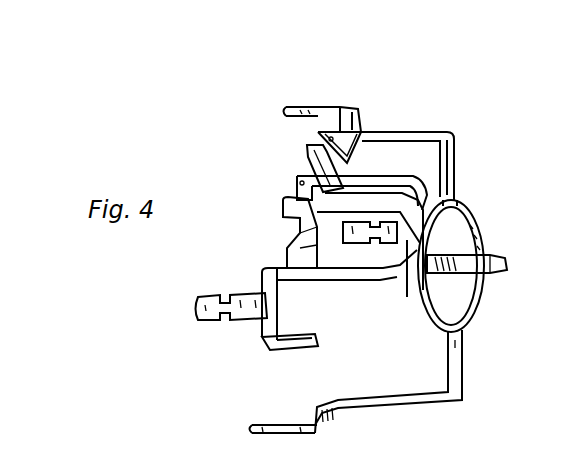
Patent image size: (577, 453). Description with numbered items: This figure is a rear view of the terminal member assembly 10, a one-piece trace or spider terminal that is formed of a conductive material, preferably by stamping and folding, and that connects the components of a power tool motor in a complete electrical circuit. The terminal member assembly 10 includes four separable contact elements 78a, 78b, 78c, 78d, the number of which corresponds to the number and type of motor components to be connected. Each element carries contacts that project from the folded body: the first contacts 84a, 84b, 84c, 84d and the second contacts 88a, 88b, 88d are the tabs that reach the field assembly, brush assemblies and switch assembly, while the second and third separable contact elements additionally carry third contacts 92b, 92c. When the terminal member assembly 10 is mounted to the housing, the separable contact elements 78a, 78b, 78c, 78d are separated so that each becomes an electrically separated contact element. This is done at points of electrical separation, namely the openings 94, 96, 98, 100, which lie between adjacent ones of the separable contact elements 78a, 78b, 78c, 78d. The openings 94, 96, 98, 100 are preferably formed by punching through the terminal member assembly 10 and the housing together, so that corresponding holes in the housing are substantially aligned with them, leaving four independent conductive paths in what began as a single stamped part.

The terminal member assembly 10 is at (455, 116).
The separable contact element 78a is at (380, 395).
The separable contact element 78b is at (357, 277).
The separable contact element 78c is at (505, 262).
The separable contact element 78d is at (443, 135).
The first contact 84a is at (265, 425).
The first contact 84b is at (198, 318).
The first contact 84c is at (298, 237).
The first contact 84d is at (305, 107).
The second contact 88a is at (298, 178).
The second contact 88b is at (297, 350).
The second contact 88d is at (323, 132).
The third contact 92b is at (283, 210).
The third contact 92c is at (307, 148).
The opening 94 is at (407, 270).
The opening 96 is at (456, 203).
The opening 98 is at (457, 165).
The opening 100 is at (482, 322).